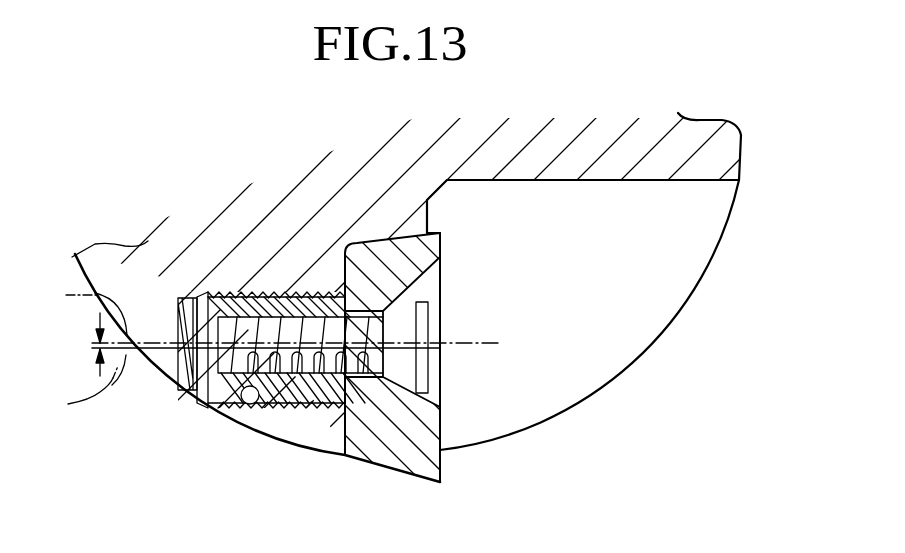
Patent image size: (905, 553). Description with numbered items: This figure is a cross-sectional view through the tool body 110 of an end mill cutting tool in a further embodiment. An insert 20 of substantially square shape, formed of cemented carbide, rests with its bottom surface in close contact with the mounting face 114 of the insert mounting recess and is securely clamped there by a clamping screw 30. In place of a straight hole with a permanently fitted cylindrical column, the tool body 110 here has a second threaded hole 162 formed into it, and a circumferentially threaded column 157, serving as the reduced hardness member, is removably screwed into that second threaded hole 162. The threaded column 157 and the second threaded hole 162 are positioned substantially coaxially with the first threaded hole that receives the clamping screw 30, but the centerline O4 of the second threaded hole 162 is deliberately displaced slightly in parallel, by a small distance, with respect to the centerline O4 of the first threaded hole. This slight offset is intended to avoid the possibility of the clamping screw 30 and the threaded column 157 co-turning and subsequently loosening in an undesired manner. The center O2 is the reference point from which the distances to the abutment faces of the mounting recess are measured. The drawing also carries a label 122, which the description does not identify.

The tool body 110 is at (690, 140).
The interior cavity 122 is at (648, 286).
The mounting face 114 is at (347, 447).
The insert 20 is at (428, 460).
The clamping screw 30 is at (405, 326).
The threaded column 157 is at (196, 393).
The second threaded hole 162 is at (252, 405).
The center O2 is at (80, 334).
The centerline O4 is at (81, 398).